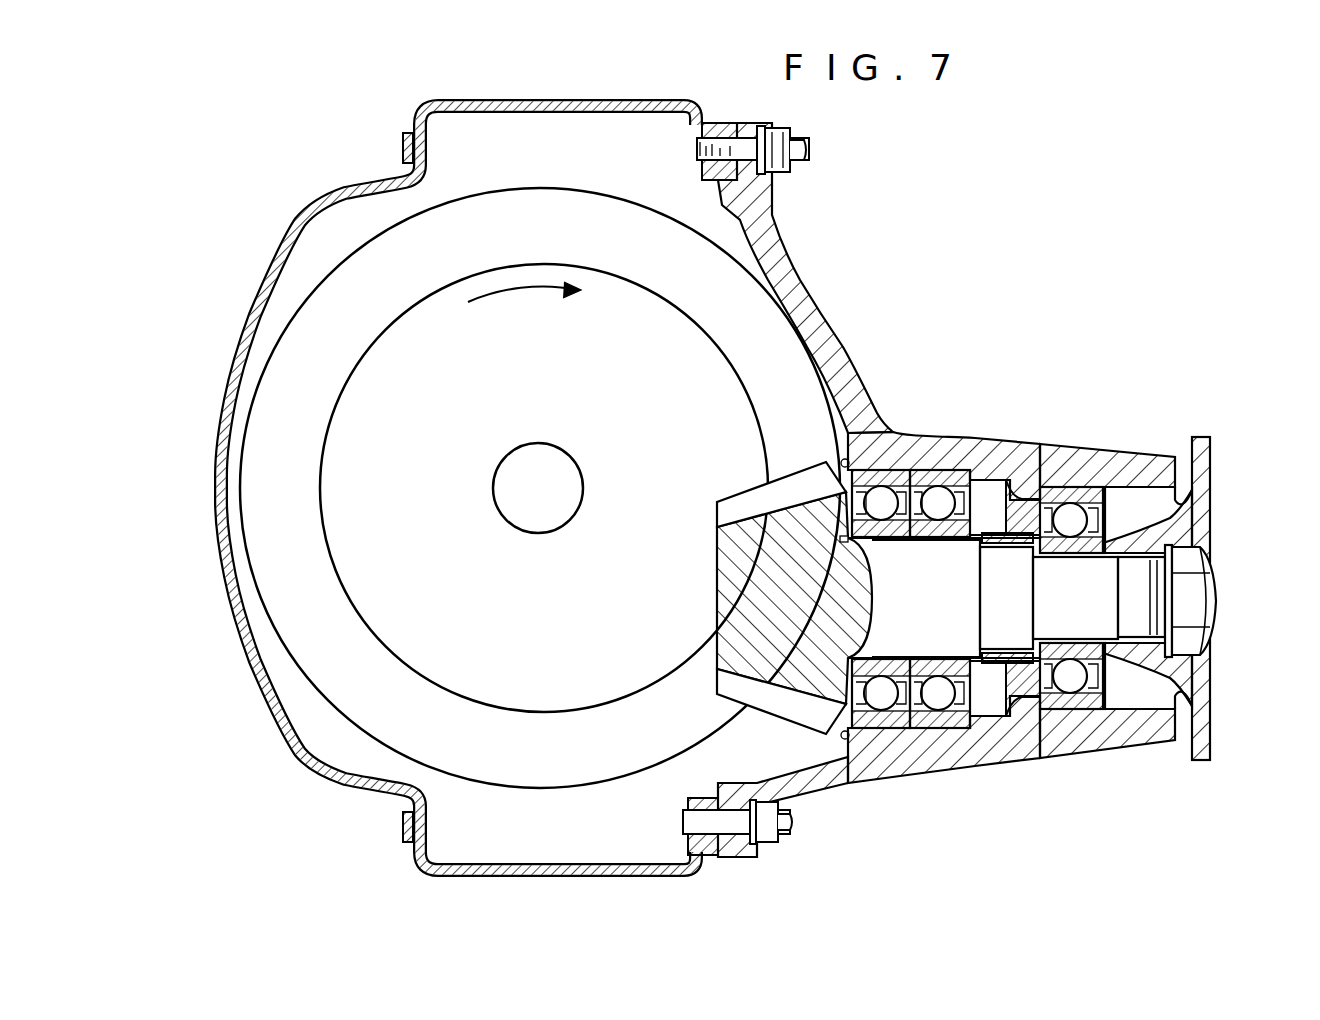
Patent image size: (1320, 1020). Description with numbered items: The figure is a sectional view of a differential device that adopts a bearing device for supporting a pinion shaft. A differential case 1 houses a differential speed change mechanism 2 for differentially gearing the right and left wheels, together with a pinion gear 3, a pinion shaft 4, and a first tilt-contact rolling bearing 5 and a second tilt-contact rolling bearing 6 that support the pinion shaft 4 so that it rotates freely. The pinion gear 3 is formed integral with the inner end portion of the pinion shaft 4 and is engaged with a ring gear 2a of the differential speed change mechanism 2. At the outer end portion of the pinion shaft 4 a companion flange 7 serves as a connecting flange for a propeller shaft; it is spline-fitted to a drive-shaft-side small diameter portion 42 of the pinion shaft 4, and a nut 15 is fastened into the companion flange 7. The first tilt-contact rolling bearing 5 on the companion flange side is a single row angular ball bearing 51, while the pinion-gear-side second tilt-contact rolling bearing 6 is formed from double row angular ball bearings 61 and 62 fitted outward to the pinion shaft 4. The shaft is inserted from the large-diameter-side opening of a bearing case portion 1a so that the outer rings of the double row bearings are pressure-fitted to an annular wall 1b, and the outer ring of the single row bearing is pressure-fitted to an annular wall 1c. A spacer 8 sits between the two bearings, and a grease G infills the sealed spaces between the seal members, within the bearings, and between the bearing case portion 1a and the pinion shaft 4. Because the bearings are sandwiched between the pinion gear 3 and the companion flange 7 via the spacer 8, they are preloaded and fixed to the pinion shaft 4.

The differential case 1 is at (305, 212).
The bearing case portion 1a is at (800, 266).
The annular wall 1b is at (914, 448).
The annular wall 1c is at (1072, 470).
The differential speed change mechanism 2 is at (544, 488).
The ring gear 2a is at (575, 192).
The pinion gear 3 is at (790, 466).
The pinion shaft 4 is at (1034, 700).
The drive-shaft-side small diameter portion 42 is at (1128, 608).
The first tilt-contact rolling bearing 5 is at (1112, 692).
The single row angular ball bearing 51 is at (1078, 700).
The second tilt-contact rolling bearing 6 is at (907, 679).
The angular ball bearing 61 is at (882, 695).
The angular ball bearing 62 is at (938, 695).
The companion flange 7 is at (1203, 440).
The spacer 8 is at (1002, 520).
The grease G is at (988, 502).
The nut 15 is at (1200, 600).